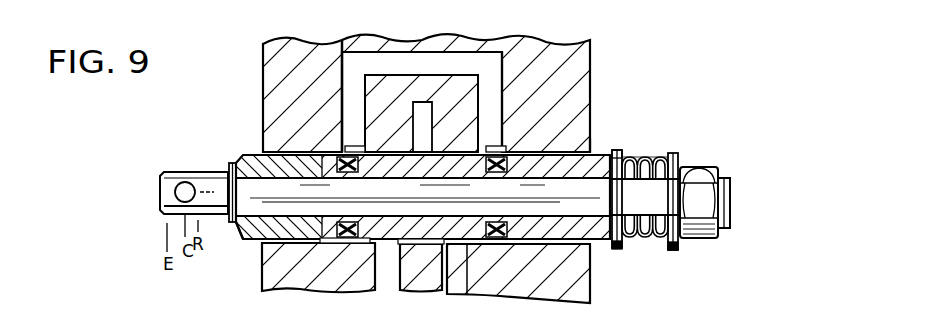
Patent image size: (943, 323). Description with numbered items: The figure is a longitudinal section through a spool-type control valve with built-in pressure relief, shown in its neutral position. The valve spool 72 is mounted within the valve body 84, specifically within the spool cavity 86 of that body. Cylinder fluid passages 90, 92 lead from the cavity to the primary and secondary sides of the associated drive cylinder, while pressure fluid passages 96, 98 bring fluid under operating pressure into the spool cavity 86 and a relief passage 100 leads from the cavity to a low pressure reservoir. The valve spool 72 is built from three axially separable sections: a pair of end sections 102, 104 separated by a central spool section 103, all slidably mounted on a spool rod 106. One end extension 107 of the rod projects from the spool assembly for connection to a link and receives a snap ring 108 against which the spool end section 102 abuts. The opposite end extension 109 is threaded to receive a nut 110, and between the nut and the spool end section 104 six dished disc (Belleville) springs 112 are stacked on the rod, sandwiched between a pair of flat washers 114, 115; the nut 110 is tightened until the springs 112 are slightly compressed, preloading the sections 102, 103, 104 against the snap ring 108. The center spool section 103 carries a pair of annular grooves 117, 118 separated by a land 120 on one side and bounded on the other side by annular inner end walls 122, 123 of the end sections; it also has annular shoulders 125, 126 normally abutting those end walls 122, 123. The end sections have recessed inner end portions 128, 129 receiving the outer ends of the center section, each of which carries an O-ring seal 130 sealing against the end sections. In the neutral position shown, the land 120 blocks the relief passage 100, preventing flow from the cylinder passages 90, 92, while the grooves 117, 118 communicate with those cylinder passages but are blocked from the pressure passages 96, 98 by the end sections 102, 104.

The valve spool 72 is at (250, 143).
The valve body 84 is at (592, 80).
The spool cavity 86 is at (592, 156).
The cylinder fluid passage 90 is at (384, 243).
The cylinder fluid passage 92 is at (458, 244).
The pressure fluid passage 96 is at (350, 54).
The pressure fluid passage 98 is at (504, 100).
The relief passage 100 is at (423, 110).
The spool end section 102 is at (243, 238).
The central spool section 103 is at (528, 240).
The spool end section 104 is at (613, 250).
The spool rod 106 is at (247, 153).
The end extension of spool rod 107 is at (160, 193).
The snap ring 108 is at (228, 180).
The opposite end extension of spool rod 109 is at (732, 200).
The nut 110 is at (703, 167).
The dished disc (Belleville) springs 112 is at (642, 148).
The flat washer 114 is at (619, 253).
The flat washer 115 is at (678, 252).
The annular groove 117 is at (378, 262).
The annular groove 118 is at (467, 246).
The land 120 is at (416, 245).
The annular inner end wall 122 is at (368, 240).
The annular inner end wall 123 is at (468, 243).
The annular shoulder 125 is at (383, 127).
The annular shoulder 126 is at (458, 139).
The recessed inner end portion 128 is at (336, 158).
The recessed inner end portion 129 is at (517, 154).
The O-ring seal 130 is at (345, 152).